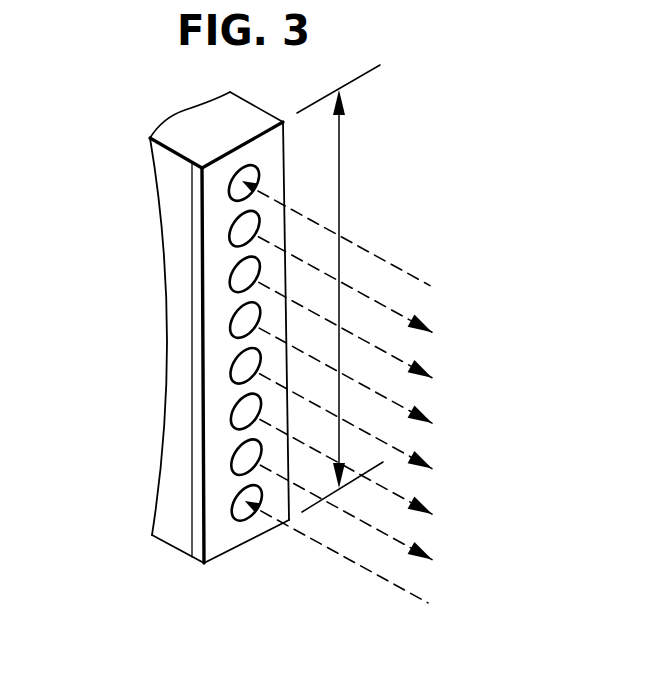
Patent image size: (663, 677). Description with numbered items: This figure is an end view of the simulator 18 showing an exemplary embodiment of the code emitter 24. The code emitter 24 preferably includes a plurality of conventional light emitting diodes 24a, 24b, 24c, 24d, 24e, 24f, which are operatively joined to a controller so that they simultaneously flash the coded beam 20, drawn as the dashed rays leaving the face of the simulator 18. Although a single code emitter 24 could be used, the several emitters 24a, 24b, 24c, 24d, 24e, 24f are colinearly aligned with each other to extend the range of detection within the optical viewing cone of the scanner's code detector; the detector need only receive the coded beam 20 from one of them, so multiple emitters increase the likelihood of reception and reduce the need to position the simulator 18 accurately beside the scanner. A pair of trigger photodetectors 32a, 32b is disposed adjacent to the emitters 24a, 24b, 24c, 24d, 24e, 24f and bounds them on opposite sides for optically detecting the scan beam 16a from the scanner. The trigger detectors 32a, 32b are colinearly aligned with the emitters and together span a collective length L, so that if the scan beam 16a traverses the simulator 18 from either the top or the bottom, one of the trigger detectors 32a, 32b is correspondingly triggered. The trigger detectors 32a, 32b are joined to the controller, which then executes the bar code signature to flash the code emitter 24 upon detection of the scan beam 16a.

The simulator 18 is at (183, 100).
The code emitter 24 is at (196, 578).
The light emitting diode 24a is at (229, 236).
The light emitting diode 24b is at (230, 281).
The light emitting diode 24c is at (230, 327).
The light emitting diode 24d is at (231, 373).
The light emitting diode 24e is at (231, 419).
The light emitting diode 24f is at (231, 464).
The trigger photodetector 32a is at (229, 190).
The trigger photodetector 32b is at (232, 510).
The scan beam 16a is at (393, 270).
The coded beam 20 is at (399, 316).
The collective length L is at (341, 167).